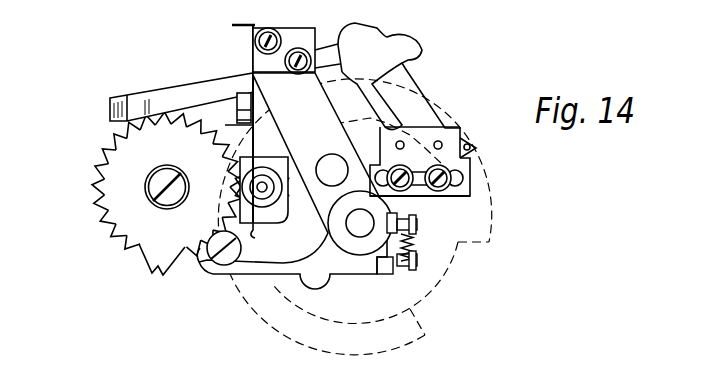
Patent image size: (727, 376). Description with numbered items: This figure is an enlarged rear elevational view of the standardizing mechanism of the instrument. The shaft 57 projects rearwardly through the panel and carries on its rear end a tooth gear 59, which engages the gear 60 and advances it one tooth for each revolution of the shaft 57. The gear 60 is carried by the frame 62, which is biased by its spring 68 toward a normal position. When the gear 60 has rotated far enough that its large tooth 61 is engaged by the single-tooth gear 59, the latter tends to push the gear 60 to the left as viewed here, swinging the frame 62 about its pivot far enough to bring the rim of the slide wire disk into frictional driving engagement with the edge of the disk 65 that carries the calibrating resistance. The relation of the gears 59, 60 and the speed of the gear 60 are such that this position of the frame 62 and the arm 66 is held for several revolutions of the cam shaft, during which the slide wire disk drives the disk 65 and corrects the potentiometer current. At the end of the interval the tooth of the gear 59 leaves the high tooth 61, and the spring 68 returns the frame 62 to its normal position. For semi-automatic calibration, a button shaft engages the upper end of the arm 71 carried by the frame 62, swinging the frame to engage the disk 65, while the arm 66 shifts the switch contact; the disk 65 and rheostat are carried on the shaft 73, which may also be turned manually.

The shaft 57 is at (263, 195).
The tooth gear 59 is at (261, 175).
The gear 60 is at (103, 159).
The large tooth 61 is at (156, 277).
The frame 62 is at (339, 262).
The disk 65 is at (486, 176).
The arm 66 is at (153, 98).
The biasing spring 68 is at (414, 243).
The arm 71 is at (393, 71).
The shaft 73 is at (365, 222).